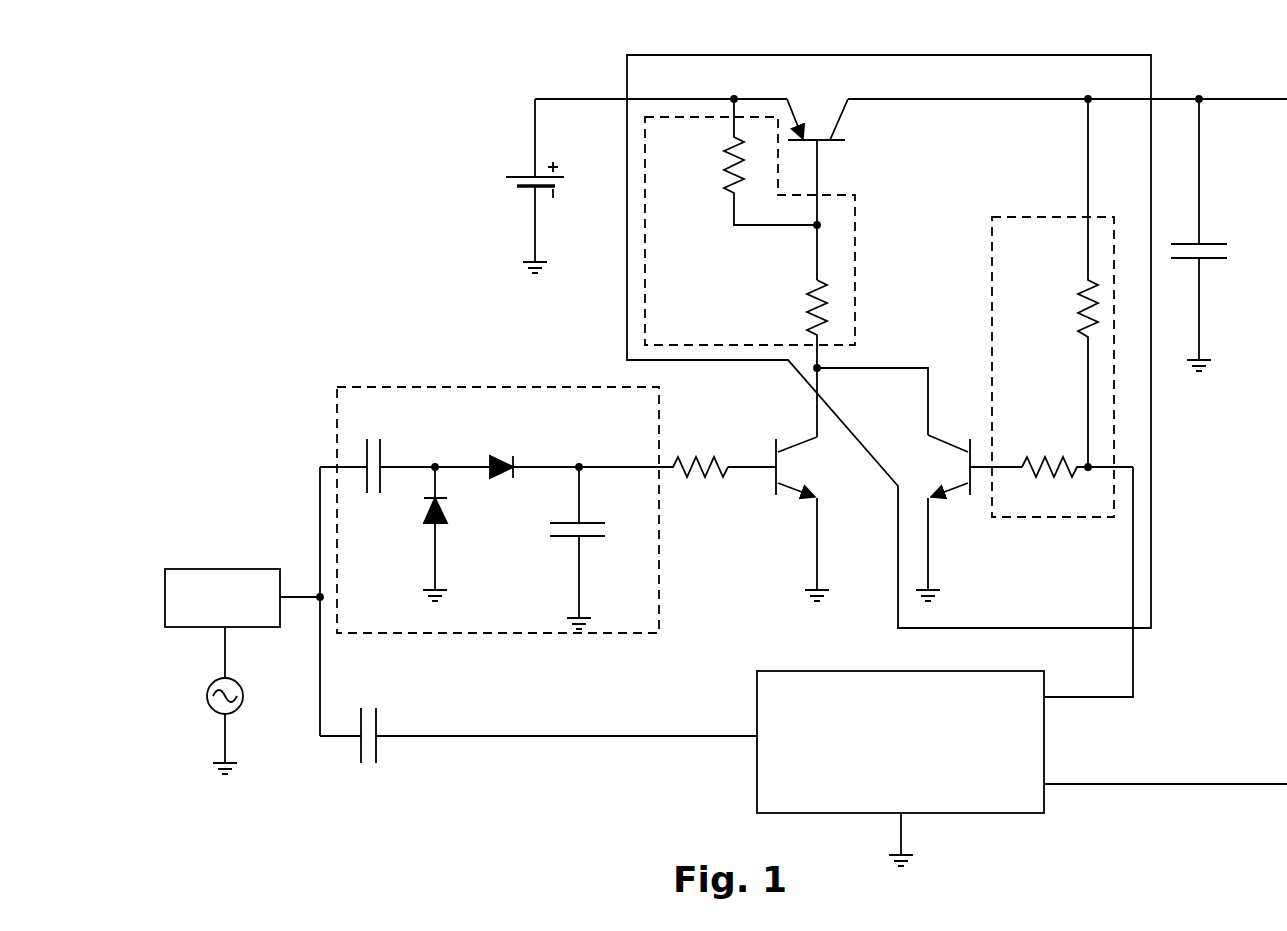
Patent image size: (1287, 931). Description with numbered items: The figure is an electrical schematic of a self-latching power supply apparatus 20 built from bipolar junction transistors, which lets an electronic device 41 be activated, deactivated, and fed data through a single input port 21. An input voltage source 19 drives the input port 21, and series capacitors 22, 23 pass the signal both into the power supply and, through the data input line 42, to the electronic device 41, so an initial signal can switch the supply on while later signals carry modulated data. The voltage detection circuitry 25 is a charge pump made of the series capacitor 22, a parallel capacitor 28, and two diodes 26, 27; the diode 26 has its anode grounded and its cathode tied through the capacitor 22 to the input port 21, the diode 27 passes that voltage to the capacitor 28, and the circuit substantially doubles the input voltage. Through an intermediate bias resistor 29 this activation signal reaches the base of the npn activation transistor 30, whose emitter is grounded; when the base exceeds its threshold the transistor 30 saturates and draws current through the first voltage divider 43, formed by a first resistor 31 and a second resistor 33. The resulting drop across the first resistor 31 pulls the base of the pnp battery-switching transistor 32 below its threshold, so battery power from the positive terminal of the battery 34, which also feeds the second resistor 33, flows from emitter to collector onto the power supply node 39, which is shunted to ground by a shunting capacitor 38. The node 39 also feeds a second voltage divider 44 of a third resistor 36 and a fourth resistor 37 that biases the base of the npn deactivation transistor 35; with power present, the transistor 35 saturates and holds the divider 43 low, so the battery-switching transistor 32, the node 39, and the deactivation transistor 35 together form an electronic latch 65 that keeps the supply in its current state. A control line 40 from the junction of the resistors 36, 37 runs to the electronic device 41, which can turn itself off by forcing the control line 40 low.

The input voltage source 19 is at (188, 692).
The self-latching power supply apparatus 20 is at (380, 62).
The input port 21 is at (242, 598).
The series capacitor 22 is at (375, 432).
The series capacitor 23 is at (368, 780).
The voltage detection circuitry 25 is at (498, 510).
The diode 26 is at (460, 512).
The diode 27 is at (507, 446).
The parallel capacitor 28 is at (614, 533).
The intermediate bias resistor 29 is at (702, 441).
The activation transistor 30 is at (764, 484).
The first resistor 31 is at (802, 300).
The battery-switching transistor 32 is at (836, 146).
The second resistor 33 is at (716, 160).
The battery 34 is at (521, 157).
The deactivation transistor 35 is at (940, 490).
The third resistor 36 is at (1055, 452).
The fourth resistor 37 is at (1072, 318).
The shunting capacitor 38 is at (1208, 238).
The power supply node 39 is at (1079, 798).
The control line 40 is at (1079, 706).
The electronic device 41 is at (900, 768).
The data input line 42 is at (742, 752).
The first voltage divider 43 is at (750, 231).
The second voltage divider 44 is at (1053, 367).
The electronic latch 65 is at (889, 341).